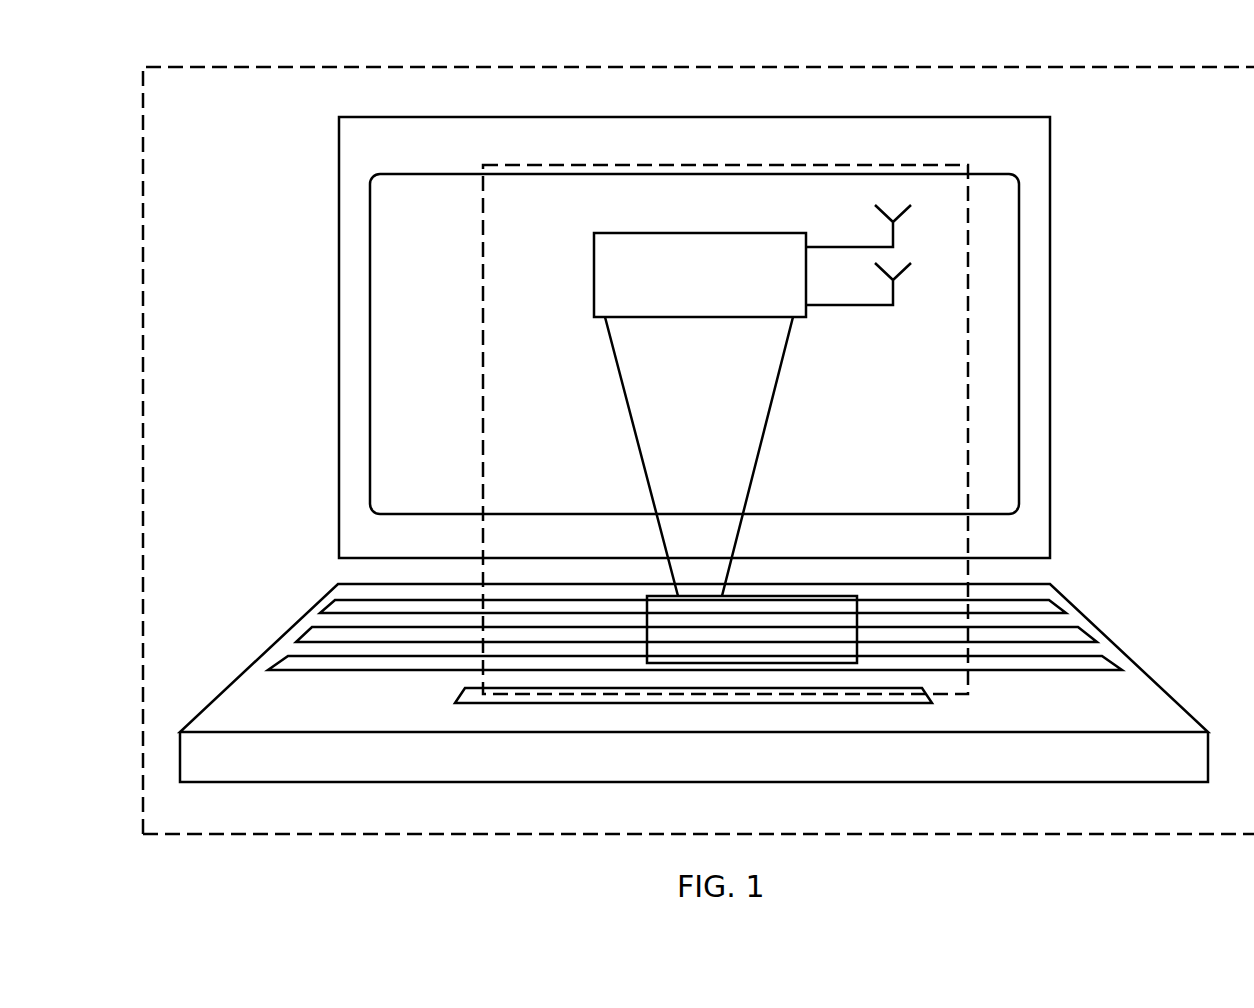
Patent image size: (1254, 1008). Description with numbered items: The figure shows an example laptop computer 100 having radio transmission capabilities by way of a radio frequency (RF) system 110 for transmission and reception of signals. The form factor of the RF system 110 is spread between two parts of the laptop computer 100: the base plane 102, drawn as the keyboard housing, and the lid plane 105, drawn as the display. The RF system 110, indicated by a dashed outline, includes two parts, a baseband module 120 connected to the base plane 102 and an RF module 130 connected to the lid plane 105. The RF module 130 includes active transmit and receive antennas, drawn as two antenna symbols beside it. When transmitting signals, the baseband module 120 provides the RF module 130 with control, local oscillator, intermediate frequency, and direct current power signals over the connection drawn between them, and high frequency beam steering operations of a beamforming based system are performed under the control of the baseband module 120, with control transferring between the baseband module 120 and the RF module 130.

The laptop computer 100 is at (1183, 67).
The base plane 102 is at (1118, 642).
The lid plane 105 is at (978, 117).
The radio frequency (RF) system 110 is at (688, 165).
The baseband module 120 is at (823, 596).
The RF module 130 is at (733, 233).